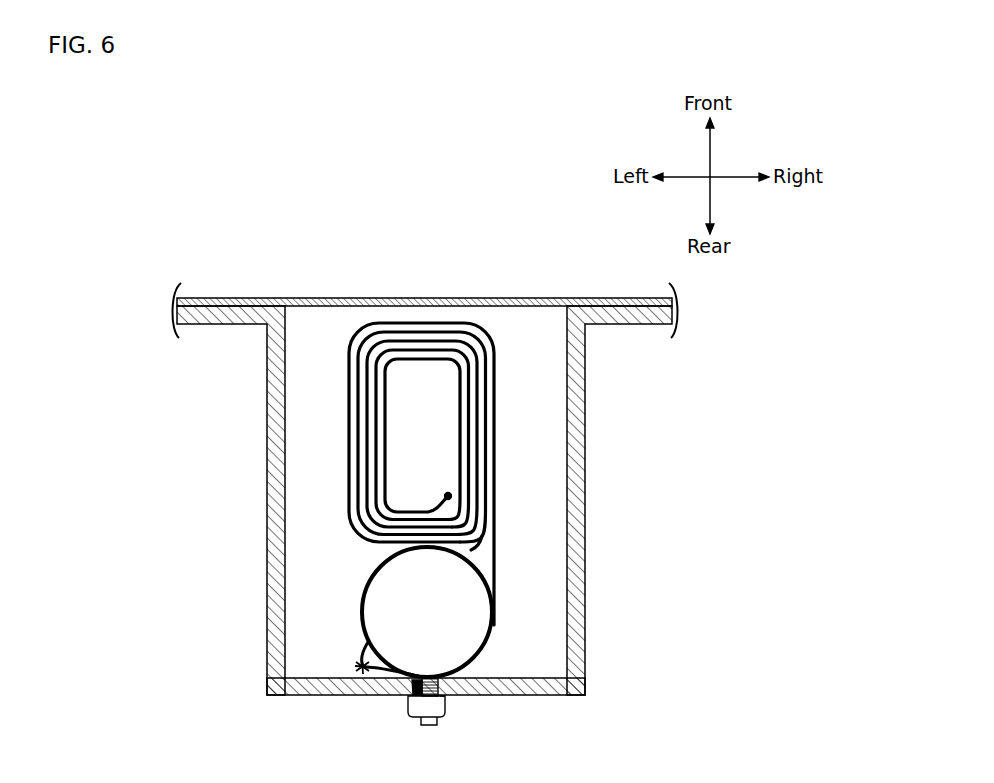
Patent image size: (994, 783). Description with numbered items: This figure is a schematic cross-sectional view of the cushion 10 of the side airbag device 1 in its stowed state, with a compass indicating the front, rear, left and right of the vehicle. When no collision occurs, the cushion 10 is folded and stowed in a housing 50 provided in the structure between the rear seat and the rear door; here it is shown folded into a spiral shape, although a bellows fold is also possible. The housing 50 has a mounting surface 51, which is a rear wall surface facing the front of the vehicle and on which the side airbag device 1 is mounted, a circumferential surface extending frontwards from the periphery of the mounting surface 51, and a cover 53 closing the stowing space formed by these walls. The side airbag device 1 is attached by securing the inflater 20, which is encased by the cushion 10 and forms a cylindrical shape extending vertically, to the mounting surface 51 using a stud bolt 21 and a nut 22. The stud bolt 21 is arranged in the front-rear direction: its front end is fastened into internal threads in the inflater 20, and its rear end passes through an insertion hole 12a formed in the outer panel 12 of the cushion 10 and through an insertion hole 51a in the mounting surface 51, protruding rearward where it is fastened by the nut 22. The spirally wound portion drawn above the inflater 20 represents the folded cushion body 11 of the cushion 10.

The side airbag device 1 is at (318, 636).
The cushion 10 is at (517, 474).
The coil body 11 is at (368, 588).
The outer panel 12 is at (497, 566).
The insertion hole 12a is at (413, 690).
The inflater 20 is at (483, 610).
The stud bolt 21 is at (428, 726).
The nut 22 is at (412, 718).
The housing 50 is at (410, 502).
The mounting surface 51 is at (541, 677).
The insertion hole 51a is at (440, 699).
The cover 53 is at (551, 297).